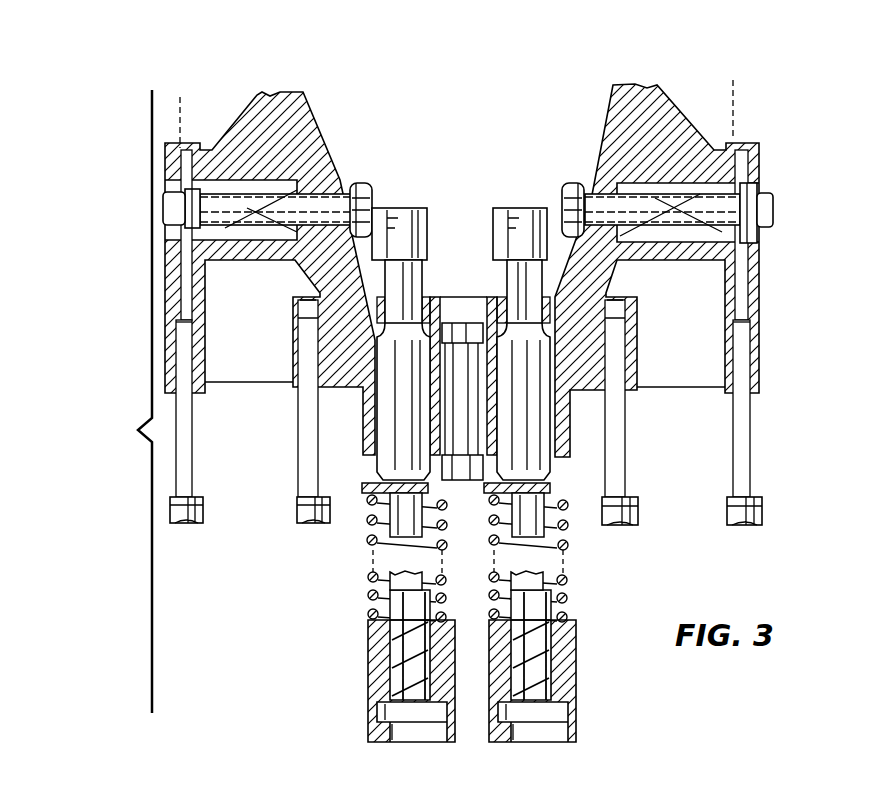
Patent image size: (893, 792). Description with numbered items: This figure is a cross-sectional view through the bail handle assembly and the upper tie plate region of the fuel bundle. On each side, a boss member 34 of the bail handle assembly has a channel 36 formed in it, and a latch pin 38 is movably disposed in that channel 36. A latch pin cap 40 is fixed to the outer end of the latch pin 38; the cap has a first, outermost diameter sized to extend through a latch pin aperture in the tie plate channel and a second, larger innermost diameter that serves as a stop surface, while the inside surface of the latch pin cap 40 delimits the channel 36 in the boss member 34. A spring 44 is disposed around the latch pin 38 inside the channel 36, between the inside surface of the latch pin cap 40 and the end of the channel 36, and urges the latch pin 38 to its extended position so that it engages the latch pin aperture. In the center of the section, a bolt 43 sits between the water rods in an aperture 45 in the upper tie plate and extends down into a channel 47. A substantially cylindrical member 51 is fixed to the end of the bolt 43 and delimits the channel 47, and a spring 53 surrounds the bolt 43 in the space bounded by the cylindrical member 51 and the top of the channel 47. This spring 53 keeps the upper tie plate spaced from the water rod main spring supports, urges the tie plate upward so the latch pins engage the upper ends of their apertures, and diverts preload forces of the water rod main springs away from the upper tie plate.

The boss member 34 is at (262, 117).
The channel 36 is at (247, 188).
The latch pin 38 is at (300, 197).
The latch pin cap 40 is at (167, 207).
The bolt 43 is at (457, 323).
The spring 44 is at (218, 232).
The aperture 45 is at (457, 370).
The channel 47 is at (547, 448).
The cylindrical member 51 is at (458, 467).
The spring 53 is at (530, 443).